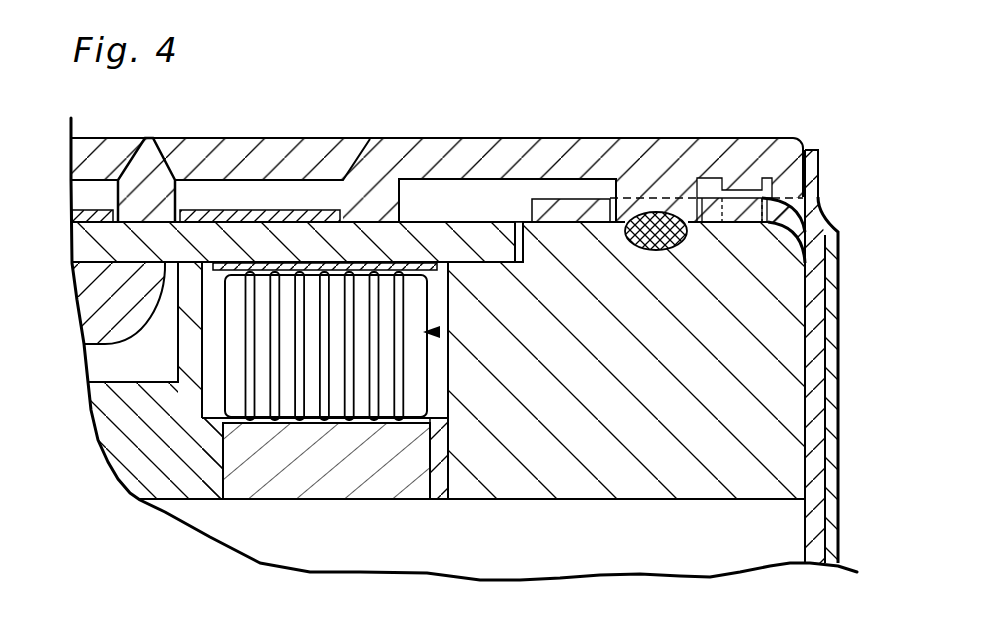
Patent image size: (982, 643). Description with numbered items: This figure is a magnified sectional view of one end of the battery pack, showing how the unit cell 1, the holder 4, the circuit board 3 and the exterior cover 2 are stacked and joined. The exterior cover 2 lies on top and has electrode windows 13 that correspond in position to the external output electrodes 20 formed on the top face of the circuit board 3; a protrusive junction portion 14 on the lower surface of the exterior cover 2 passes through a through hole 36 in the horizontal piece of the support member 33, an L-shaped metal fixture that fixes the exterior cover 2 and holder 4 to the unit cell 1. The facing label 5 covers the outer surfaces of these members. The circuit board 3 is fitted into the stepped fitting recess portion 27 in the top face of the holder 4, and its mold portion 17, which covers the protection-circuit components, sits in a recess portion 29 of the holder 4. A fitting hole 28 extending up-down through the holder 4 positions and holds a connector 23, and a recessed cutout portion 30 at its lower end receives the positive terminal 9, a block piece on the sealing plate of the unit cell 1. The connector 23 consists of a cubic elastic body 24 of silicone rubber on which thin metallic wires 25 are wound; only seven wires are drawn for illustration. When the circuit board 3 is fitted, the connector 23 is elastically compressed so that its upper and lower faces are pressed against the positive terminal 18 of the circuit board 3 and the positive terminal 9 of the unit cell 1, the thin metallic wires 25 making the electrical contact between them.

The unit cell 1 is at (453, 553).
The exterior cover 2 is at (522, 137).
The circuit board 3 is at (425, 233).
The holder 4 is at (790, 411).
The facing label 5 is at (840, 257).
The positive terminal 9 is at (332, 478).
The electrode windows 13 is at (117, 190).
The protrusive junction portions 14 is at (655, 213).
The mold portion 17 is at (83, 283).
The positive terminal 18 is at (437, 276).
The external output electrodes 20 is at (92, 210).
The connector 23 is at (437, 332).
The elastic body 24 is at (237, 347).
The thin metallic wires 25 is at (330, 405).
The fitting recess portion 27 is at (513, 240).
The fitting holes 28 is at (448, 350).
The recess portion 29 is at (113, 380).
The recessed cutout portion 30 is at (437, 468).
The support member 33 is at (817, 350).
The through hole 36 is at (633, 198).